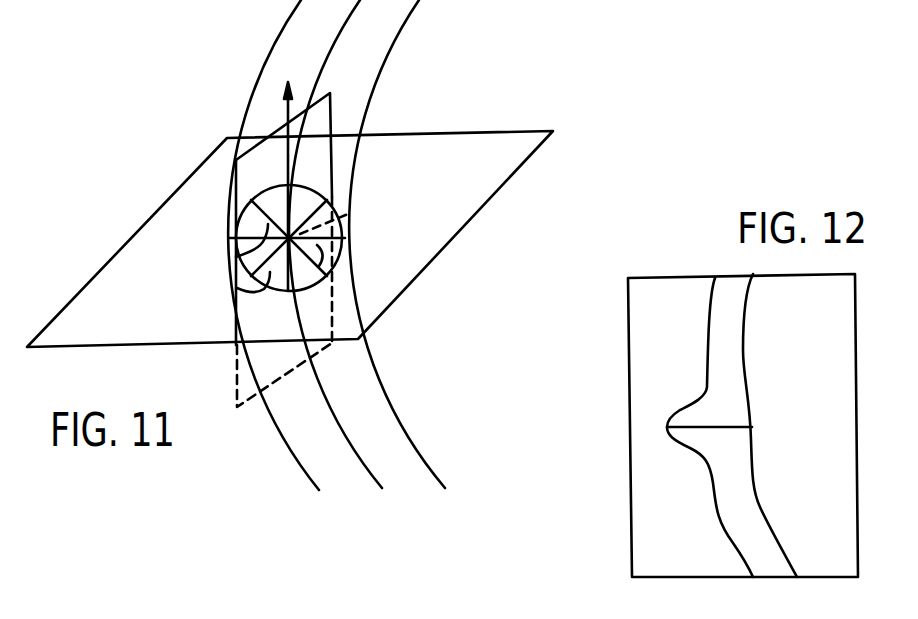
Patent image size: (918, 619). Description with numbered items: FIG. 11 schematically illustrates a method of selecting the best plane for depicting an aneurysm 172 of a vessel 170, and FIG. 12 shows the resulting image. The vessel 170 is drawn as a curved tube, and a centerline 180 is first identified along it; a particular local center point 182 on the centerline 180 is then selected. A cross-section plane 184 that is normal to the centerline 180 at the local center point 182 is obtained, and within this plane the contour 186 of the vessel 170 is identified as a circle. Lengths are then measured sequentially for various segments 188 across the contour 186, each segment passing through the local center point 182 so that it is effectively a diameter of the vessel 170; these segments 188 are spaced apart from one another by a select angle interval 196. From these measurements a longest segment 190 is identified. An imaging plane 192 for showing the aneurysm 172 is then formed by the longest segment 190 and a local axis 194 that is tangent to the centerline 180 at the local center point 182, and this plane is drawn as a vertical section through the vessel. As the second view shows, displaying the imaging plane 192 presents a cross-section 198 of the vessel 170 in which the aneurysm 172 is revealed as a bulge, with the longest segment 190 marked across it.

In FIG. 11, the vessel 170 is at (428, 470).
In FIG. 11, the aneurysm 172 is at (214, 302).
In FIG. 12, the aneurysm 172 is at (666, 456).
In FIG. 11, the centerline 180 is at (374, 486).
In FIG. 11, the local center point 182 is at (348, 214).
In FIG. 11, the cross-section plane 184 is at (521, 166).
In FIG. 11, the contour 186 is at (253, 200).
In FIG. 11, the segments 188 is at (262, 247).
In FIG. 11, the longest segment 190 is at (266, 292).
In FIG. 12, the longest segment 190 is at (710, 428).
In FIG. 11, the imaging plane 192 is at (333, 127).
In FIG. 12, the imaging plane 192 is at (629, 487).
In FIG. 11, the local axis 194 is at (286, 112).
In FIG. 11, the angle interval 196 is at (338, 238).
In FIG. 12, the cross-section 198 is at (764, 333).